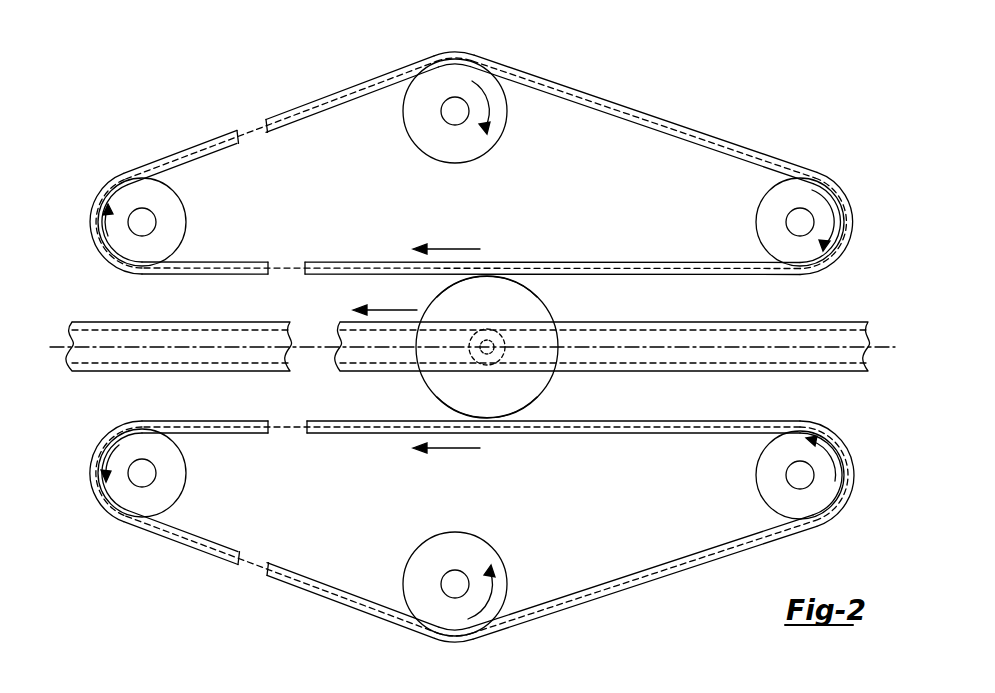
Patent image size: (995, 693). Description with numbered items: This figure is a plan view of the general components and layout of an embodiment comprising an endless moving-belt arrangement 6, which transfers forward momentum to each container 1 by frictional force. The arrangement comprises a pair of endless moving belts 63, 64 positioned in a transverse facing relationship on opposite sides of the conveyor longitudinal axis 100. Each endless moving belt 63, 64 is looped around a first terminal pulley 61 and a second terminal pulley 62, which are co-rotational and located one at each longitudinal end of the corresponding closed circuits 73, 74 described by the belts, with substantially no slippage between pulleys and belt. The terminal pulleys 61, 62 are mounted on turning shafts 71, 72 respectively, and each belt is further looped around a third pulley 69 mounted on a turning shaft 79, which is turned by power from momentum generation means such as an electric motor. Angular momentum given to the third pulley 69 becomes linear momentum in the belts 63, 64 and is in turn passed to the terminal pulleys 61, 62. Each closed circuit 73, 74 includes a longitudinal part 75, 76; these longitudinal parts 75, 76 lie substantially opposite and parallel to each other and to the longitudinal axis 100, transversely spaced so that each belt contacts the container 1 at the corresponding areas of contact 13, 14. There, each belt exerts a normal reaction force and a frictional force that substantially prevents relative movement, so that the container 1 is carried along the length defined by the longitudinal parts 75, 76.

The container 1 is at (460, 387).
The endless moving-belt arrangement 6 is at (472, 339).
The area of contact 13 is at (487, 277).
The area of contact 14 is at (487, 417).
The first terminal pulley 61 is at (100, 220).
The second terminal pulley 62 is at (801, 190).
The endless moving belt 63 is at (620, 110).
The endless moving belt 64 is at (555, 607).
The third pulley 69 is at (427, 82).
The turning shaft 71 is at (140, 213).
The turning shaft 72 is at (805, 222).
The closed circuit 73 is at (663, 127).
The closed circuit 74 is at (628, 580).
The longitudinal part 75 is at (578, 268).
The longitudinal part 76 is at (540, 427).
The turning shaft 79 is at (455, 104).
The conveyor longitudinal axis 100 is at (178, 345).